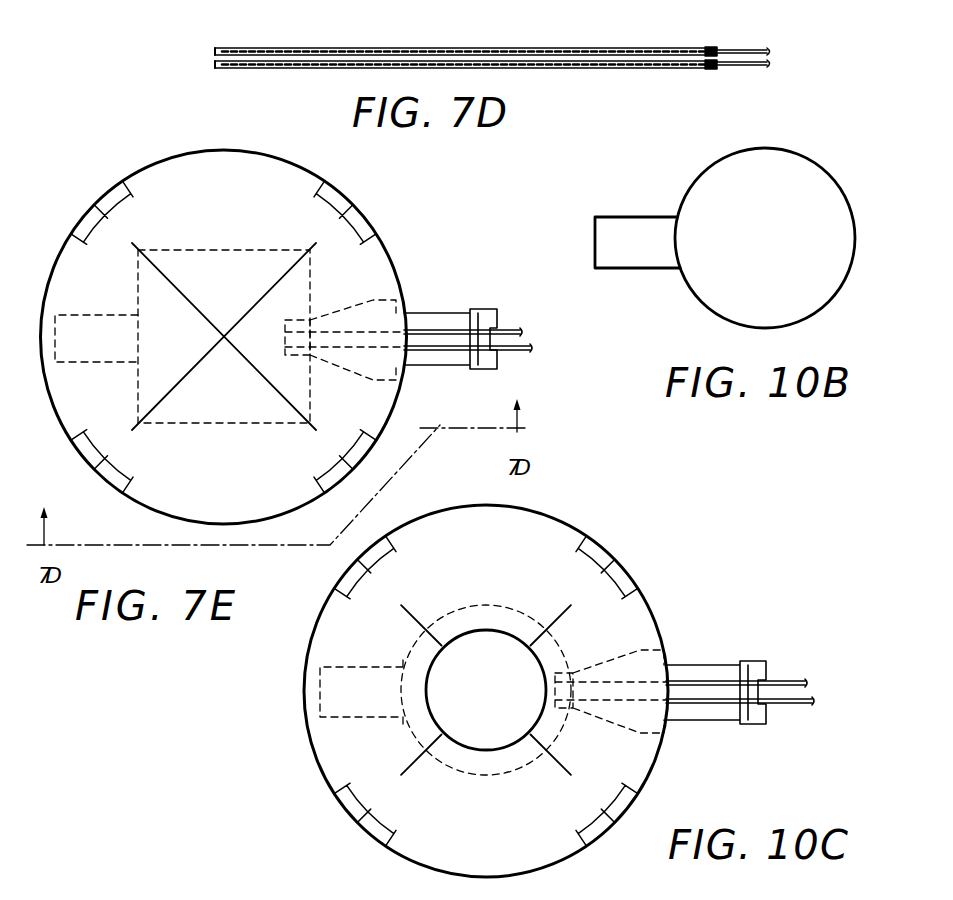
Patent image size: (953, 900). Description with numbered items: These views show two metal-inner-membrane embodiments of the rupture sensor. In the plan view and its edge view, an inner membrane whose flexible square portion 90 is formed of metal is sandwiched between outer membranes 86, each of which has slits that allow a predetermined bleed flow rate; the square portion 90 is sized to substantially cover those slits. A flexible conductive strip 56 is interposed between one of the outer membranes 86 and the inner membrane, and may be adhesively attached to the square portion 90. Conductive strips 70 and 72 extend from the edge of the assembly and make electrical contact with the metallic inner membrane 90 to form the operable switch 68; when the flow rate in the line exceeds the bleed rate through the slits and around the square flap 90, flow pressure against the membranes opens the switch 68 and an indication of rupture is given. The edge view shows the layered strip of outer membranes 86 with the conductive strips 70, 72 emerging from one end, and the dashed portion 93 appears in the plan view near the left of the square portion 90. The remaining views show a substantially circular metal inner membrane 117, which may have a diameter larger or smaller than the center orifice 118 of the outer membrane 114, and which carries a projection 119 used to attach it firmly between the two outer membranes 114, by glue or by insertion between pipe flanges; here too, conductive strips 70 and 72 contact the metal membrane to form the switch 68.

In FIG. 7D, the flexible conductive strip 56 is at (289, 65).
In FIG. 7E, the flexible conductive strip 56 is at (88, 371).
In FIG. 7D, the switch 68 is at (612, 50).
In FIG. 7E, the switch 68 is at (320, 306).
In FIG. 10C, the switch 68 is at (578, 656).
In FIG. 7E, the conductive strip 70 is at (448, 312).
In FIG. 10C, the conductive strip 70 is at (701, 664).
In FIG. 7D, the conductive strip 72 is at (742, 52).
In FIG. 7E, the conductive strip 72 is at (430, 367).
In FIG. 10C, the conductive strip 72 is at (705, 720).
In FIG. 7D, the outer membrane 86 is at (400, 48).
In FIG. 7E, the outer membrane 86 is at (151, 161).
In FIG. 7D, the flexible square portion 90 is at (482, 50).
In FIG. 7E, the flexible square portion 90 is at (230, 278).
In FIG. 7D, the tab 93 is at (278, 53).
In FIG. 7E, the tab 93 is at (99, 330).
In FIG. 10C, the outer membrane 114 is at (571, 511).
In FIG. 10B, the metal inner membrane 117 is at (781, 239).
In FIG. 10C, the metal inner membrane 117 is at (496, 601).
In FIG. 10C, the center orifice 118 is at (437, 692).
In FIG. 10B, the projection 119 is at (629, 232).
In FIG. 10C, the projection 119 is at (355, 695).